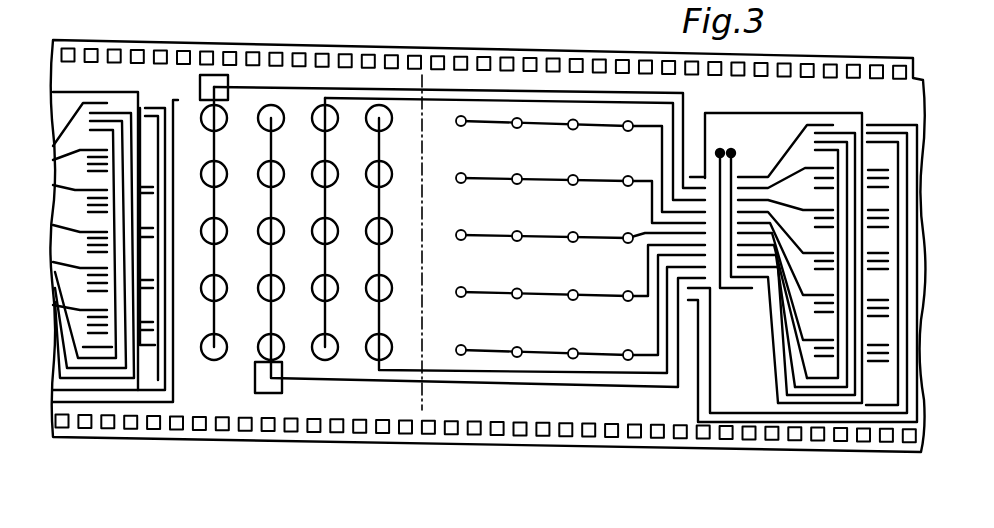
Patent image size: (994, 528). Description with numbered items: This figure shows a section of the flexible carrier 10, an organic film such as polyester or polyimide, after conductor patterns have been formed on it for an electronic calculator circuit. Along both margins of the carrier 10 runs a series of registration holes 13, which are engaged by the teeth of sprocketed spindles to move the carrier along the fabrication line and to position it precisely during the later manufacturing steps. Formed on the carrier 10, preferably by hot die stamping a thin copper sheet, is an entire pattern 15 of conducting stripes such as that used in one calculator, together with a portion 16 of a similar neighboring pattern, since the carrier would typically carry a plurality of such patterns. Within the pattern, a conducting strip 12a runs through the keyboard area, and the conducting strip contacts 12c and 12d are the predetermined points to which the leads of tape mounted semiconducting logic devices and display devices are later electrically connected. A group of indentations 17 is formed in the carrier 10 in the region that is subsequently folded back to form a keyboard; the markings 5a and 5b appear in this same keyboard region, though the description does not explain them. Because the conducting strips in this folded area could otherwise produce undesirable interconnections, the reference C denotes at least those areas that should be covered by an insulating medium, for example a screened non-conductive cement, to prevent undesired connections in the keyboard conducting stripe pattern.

The carrier 10 is at (547, 50).
The registration holes 13 is at (620, 58).
The lead conductor pattern 12a is at (270, 324).
The conducting strip contacts 12c is at (752, 177).
The conducting strip contacts 12d is at (163, 105).
The indentations 17 is at (214, 360).
The hole pitch in length direction 5a is at (195, 228).
The hole pitch in width direction 5b is at (184, 150).
The areas to be covered by insulating medium C is at (219, 78).
The pattern 15 is at (912, 450).
The portion of a similar pattern 16 is at (177, 446).